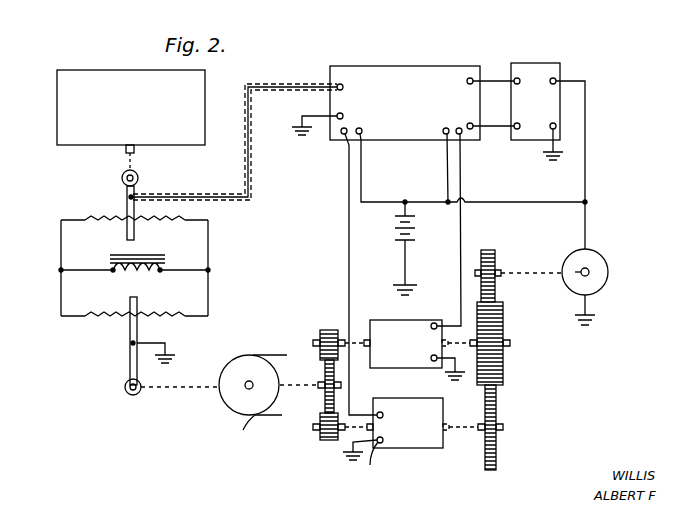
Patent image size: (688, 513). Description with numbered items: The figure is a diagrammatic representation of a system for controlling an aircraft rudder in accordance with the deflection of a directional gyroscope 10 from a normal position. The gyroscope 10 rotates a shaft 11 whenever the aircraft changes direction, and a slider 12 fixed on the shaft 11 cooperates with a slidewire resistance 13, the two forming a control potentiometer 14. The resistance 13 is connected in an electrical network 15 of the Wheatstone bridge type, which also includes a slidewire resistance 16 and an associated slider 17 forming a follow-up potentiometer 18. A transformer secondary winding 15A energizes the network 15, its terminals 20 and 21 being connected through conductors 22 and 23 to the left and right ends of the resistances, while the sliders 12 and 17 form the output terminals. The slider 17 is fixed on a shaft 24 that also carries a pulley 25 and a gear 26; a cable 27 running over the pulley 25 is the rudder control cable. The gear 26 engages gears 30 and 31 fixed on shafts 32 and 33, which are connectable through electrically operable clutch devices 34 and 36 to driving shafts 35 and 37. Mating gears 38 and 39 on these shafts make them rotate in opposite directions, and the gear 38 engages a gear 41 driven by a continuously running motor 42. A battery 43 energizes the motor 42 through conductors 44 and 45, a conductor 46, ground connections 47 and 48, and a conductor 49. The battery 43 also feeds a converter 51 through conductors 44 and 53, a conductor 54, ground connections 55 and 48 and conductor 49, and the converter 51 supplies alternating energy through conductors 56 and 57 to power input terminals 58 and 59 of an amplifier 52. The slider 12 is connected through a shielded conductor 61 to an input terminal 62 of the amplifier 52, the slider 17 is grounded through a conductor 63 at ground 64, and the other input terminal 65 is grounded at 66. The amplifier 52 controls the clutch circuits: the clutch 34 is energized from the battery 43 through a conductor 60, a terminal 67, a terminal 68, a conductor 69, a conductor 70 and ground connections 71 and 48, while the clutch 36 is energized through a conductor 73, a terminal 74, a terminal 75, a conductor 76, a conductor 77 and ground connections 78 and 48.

The directional gyroscope 10 is at (57, 106).
The shaft 11 is at (134, 150).
The slider 12 is at (138, 236).
The slidewire resistance 13 is at (106, 235).
The control potentiometer 14 is at (114, 202).
The electrical network 15 is at (190, 254).
The transformer secondary winding 15A is at (118, 272).
The slidewire resistance 16 is at (114, 316).
The slider 17 is at (138, 306).
The follow-up potentiometer 18 is at (121, 330).
The terminal 20 is at (113, 270).
The terminal 21 is at (158, 272).
The conductor 22 is at (82, 272).
The conductor 23 is at (194, 272).
The shaft 24 is at (316, 392).
The pulley 25 is at (224, 392).
The gear 26 is at (325, 370).
The cable 27 is at (270, 355).
The gear 30 is at (329, 330).
The gear 31 is at (331, 441).
The shaft 32 is at (320, 342).
The shaft 33 is at (318, 432).
The clutch device 34 is at (398, 320).
The driving shaft 35 is at (506, 336).
The clutch device 36 is at (418, 448).
The driving shaft 37 is at (500, 428).
The gear 38 is at (500, 358).
The gear 39 is at (497, 405).
The gear 41 is at (496, 259).
The motor 42 is at (605, 270).
The battery 43 is at (417, 228).
The conductor 44 is at (509, 204).
The conductor 45 is at (588, 214).
The conductor 46 is at (590, 305).
The ground connection 47 is at (575, 315).
The ground connection 48 is at (398, 285).
The conductor 49 is at (407, 268).
The converter 51 is at (540, 63).
The amplifier 52 is at (393, 66).
The conductor 53 is at (587, 149).
The conductor 54 is at (546, 149).
The ground connection 55 is at (543, 164).
The conductor 56 is at (494, 78).
The conductor 57 is at (494, 123).
The power input terminal 58 is at (467, 81).
The power input terminal 59 is at (470, 123).
The conductor 60 is at (447, 166).
The shielded conductor 61 is at (252, 186).
The input terminal 62 is at (343, 87).
The conductor 63 is at (165, 343).
The ground 64 is at (177, 359).
The input terminal 65 is at (343, 117).
The ground 66 is at (296, 118).
The terminal 67 is at (443, 131).
The terminal 68 is at (458, 128).
The conductor 69 is at (462, 181).
The conductor 70 is at (440, 370).
The ground connection 71 is at (447, 378).
The conductor 73 is at (362, 167).
The terminal 74 is at (362, 131).
The terminal 75 is at (342, 134).
The conductor 76 is at (348, 208).
The conductor 77 is at (384, 463).
The ground connection 78 is at (356, 462).